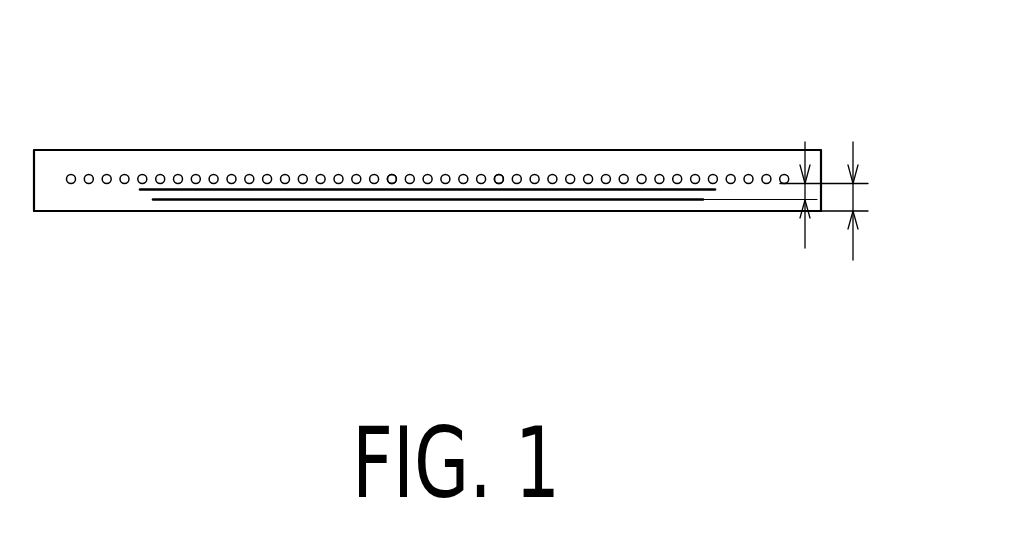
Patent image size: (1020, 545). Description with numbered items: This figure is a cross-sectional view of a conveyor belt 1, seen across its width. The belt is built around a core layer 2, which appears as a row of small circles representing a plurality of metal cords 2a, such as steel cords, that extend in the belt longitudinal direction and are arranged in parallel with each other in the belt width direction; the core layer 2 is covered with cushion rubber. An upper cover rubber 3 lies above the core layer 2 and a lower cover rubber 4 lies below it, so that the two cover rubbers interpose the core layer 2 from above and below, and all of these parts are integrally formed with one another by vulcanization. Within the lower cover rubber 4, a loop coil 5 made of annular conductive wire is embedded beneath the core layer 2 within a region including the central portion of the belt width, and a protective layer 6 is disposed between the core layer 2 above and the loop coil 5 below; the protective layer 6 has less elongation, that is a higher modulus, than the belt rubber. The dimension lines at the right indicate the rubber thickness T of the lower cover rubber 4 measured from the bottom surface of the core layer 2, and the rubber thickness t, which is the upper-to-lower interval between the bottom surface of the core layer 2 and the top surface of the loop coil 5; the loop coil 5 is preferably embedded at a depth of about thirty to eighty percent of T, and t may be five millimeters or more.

The conveyor belt 1 is at (728, 150).
The core layer 2 is at (624, 173).
The metal cord 2a is at (387, 172).
The upper cover rubber 3 is at (256, 167).
The lower cover rubber 4 is at (107, 194).
The loop coil 5 is at (228, 200).
The protective layer 6 is at (327, 191).
The rubber thickness t is at (805, 192).
The rubber thickness T is at (855, 201).